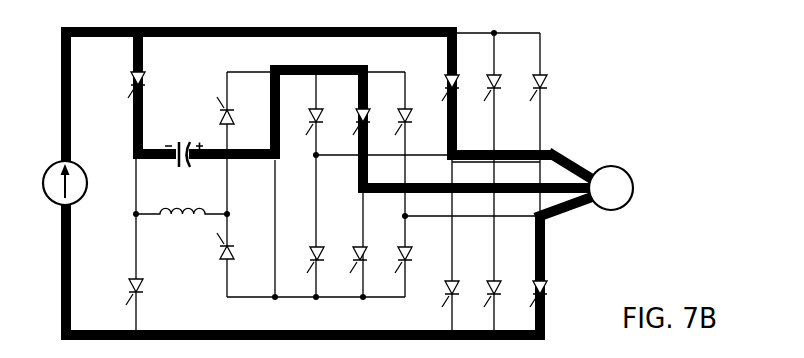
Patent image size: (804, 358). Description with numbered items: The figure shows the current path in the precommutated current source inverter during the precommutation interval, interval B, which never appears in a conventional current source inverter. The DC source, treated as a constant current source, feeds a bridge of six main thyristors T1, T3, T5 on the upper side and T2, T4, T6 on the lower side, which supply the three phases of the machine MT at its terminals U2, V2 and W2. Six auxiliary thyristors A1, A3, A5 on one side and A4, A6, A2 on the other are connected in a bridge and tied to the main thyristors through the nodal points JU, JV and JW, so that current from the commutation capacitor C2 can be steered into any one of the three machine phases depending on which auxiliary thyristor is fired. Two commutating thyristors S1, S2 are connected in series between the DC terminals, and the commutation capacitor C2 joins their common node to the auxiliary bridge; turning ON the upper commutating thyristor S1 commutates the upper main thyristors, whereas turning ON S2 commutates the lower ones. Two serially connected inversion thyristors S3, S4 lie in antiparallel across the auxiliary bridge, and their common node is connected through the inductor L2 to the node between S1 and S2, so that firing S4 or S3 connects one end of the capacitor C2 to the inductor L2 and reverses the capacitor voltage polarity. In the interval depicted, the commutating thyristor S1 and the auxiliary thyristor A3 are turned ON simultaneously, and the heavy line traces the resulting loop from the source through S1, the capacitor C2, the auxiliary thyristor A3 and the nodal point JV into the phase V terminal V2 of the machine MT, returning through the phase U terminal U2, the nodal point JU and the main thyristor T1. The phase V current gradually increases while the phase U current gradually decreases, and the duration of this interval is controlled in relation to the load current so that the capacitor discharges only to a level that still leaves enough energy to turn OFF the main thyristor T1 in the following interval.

The upper commutating thyristor S1 is at (147, 79).
The lower side commutating thyristor S2 is at (147, 289).
The inversion thyristor S3 is at (220, 260).
The inversion thyristor S4 is at (237, 111).
The commutation capacitor C2 is at (184, 142).
The inductor L2 is at (181, 203).
The auxiliary thyristor A1 is at (308, 109).
The auxiliary thyristor A2 is at (397, 247).
The auxiliary thyristor A3 is at (355, 109).
The auxiliary thyristor A4 is at (309, 247).
The auxiliary thyristor A5 is at (397, 109).
The auxiliary thyristor A6 is at (352, 247).
The main thyristor T1 is at (445, 76).
The main thyristor T2 is at (547, 292).
The main thyristor T3 is at (489, 76).
The main thyristor T4 is at (460, 281).
The main thyristor T5 is at (547, 83).
The main thyristor T6 is at (502, 283).
The nodal point JU is at (457, 150).
The nodal point JV is at (490, 195).
The nodal point JW is at (536, 222).
The phase U terminal U2 is at (570, 158).
The phase V terminal V2 is at (570, 177).
The phase W terminal W2 is at (566, 207).
The machine MT is at (611, 188).